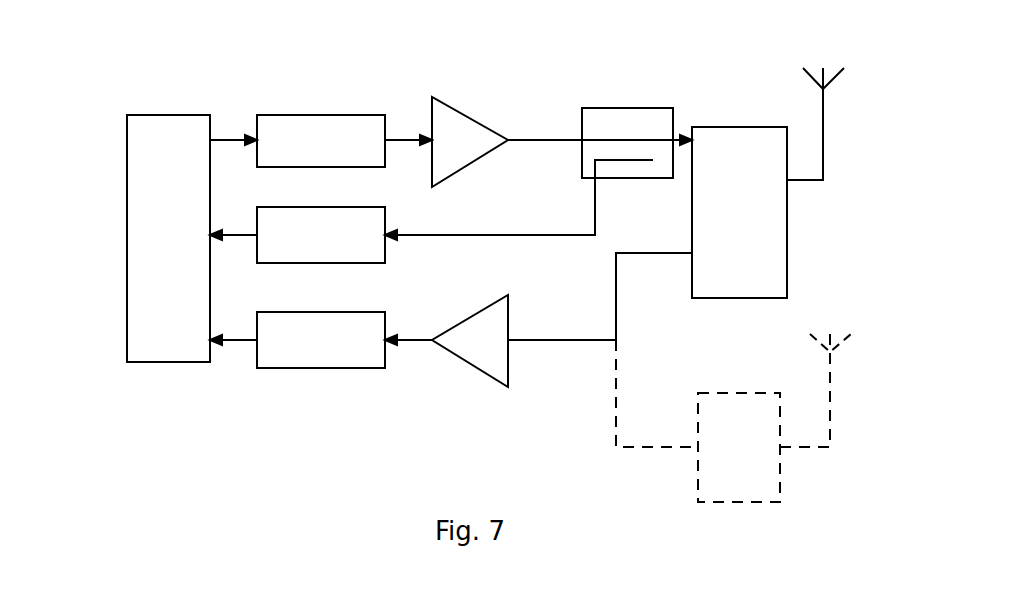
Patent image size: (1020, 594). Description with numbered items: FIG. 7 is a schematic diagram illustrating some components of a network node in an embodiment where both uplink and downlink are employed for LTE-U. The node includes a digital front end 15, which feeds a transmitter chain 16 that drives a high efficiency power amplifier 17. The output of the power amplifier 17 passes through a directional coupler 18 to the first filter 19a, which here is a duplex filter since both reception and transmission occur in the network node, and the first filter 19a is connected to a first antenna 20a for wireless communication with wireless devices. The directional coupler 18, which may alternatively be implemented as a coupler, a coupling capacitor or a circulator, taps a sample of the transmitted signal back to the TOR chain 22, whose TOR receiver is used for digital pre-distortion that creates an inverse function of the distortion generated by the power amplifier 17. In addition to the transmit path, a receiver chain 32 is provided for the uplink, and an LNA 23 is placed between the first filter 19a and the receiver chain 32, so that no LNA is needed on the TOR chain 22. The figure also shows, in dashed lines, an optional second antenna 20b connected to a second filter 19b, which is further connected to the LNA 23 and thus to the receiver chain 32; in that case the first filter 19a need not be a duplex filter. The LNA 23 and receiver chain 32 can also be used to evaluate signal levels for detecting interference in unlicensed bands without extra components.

The digital front end 15 is at (127, 240).
The transmitter chain 16 is at (323, 115).
The high efficiency power amplifier 17 is at (463, 113).
The directional coupler 18 is at (624, 108).
The first filter 19a is at (730, 127).
The second filter 19b is at (698, 470).
The first antenna 20a is at (836, 90).
The second antenna 20b is at (838, 350).
The TOR chain 22 is at (257, 207).
The LNA 23 is at (478, 312).
The receiver chain 32 is at (320, 312).